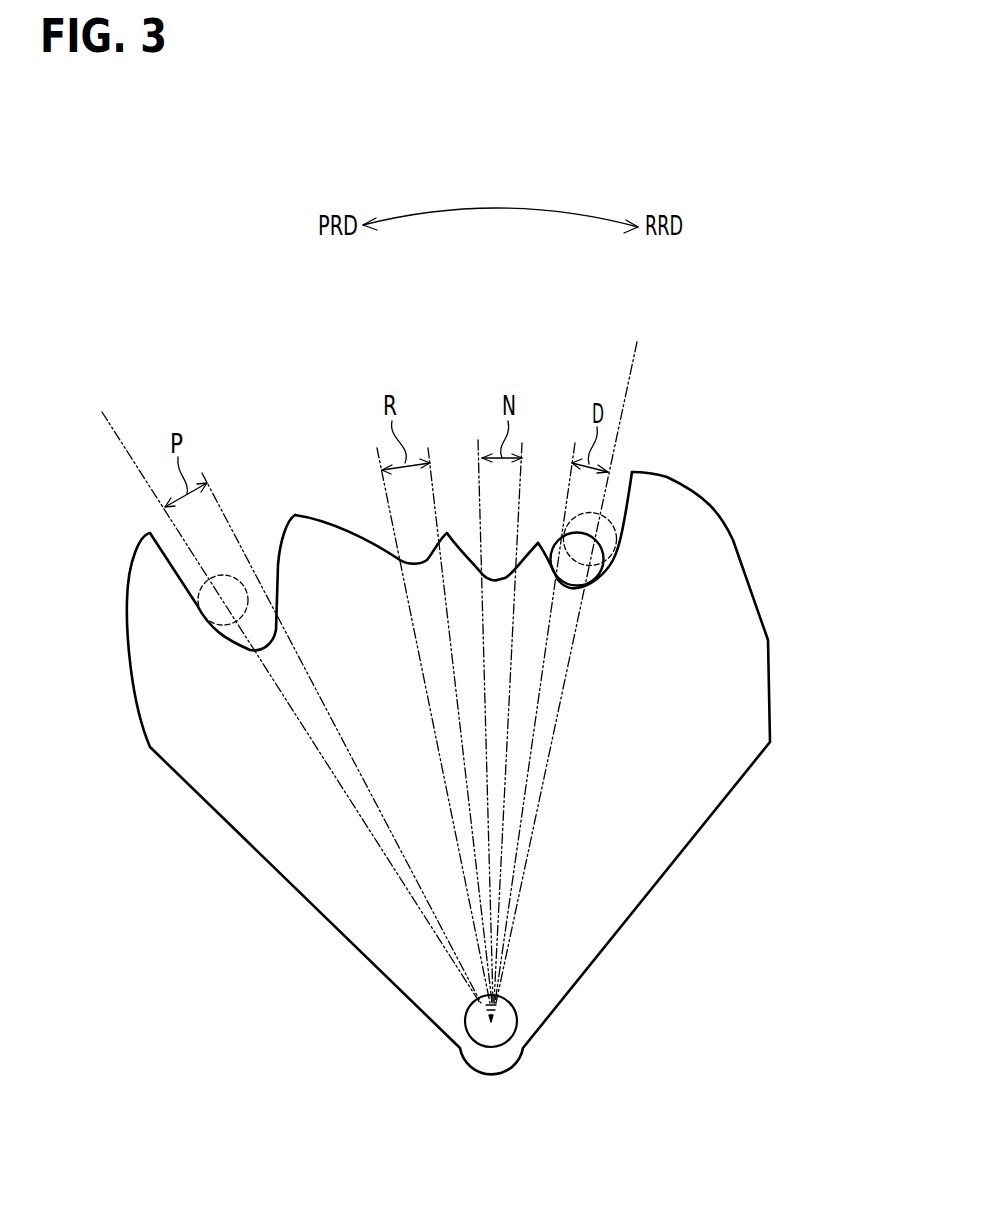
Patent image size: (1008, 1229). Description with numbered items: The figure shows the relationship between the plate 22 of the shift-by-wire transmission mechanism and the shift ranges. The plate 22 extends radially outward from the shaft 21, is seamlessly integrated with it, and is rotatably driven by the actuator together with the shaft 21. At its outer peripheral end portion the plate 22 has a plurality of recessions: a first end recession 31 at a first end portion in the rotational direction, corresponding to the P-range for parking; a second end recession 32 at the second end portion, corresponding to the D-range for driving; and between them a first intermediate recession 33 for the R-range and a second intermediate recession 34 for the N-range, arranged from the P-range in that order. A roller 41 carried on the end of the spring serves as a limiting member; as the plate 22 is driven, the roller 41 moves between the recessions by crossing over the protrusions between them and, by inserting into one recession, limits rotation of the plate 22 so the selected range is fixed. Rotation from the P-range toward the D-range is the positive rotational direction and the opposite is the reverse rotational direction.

The shaft 21 is at (468, 1033).
The plate 22 is at (762, 540).
The first end recession 31 is at (247, 638).
The second end recession 32 is at (590, 583).
The first intermediate recession 33 is at (413, 562).
The second intermediate recession 34 is at (498, 580).
The roller 41 is at (243, 570).